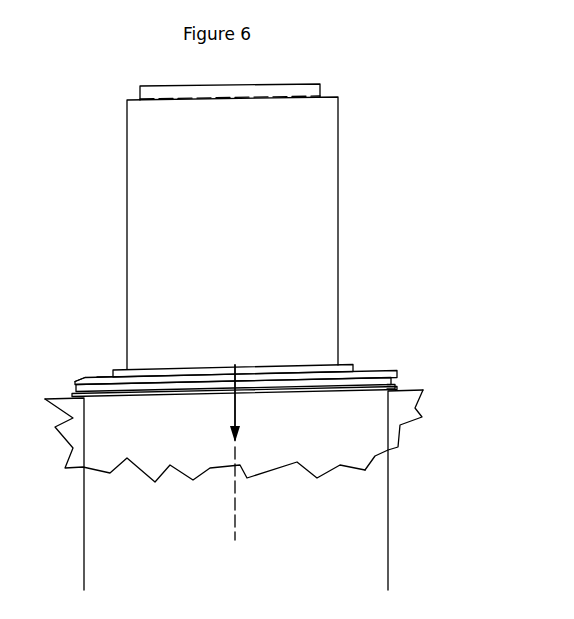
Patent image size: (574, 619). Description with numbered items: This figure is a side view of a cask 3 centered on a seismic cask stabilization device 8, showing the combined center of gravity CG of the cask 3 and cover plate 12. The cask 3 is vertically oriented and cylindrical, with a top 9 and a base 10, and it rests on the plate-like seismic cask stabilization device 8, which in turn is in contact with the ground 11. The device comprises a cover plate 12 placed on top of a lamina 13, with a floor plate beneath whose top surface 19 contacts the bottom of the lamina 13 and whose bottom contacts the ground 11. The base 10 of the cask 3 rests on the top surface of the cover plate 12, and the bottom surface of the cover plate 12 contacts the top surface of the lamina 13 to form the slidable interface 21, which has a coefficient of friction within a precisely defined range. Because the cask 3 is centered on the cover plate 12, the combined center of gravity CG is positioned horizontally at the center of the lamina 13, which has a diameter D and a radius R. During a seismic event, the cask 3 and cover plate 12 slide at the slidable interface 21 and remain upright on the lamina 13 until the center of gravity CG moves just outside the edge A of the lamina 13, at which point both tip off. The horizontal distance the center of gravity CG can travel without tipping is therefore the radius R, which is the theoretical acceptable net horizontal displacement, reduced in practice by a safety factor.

The cask 3 is at (371, 187).
The seismic cask stabilization device 8 is at (410, 378).
The top 9 is at (322, 89).
The base 10 is at (349, 367).
The ground 11 is at (400, 423).
The cover plate 12 is at (372, 372).
The lamina 13 is at (380, 380).
The top surface 19 is at (80, 405).
The slidable interface 21 is at (97, 377).
The edge A is at (76, 383).
The combined center of gravity CG is at (235, 422).
The radius R is at (233, 515).
The diameter D is at (386, 578).